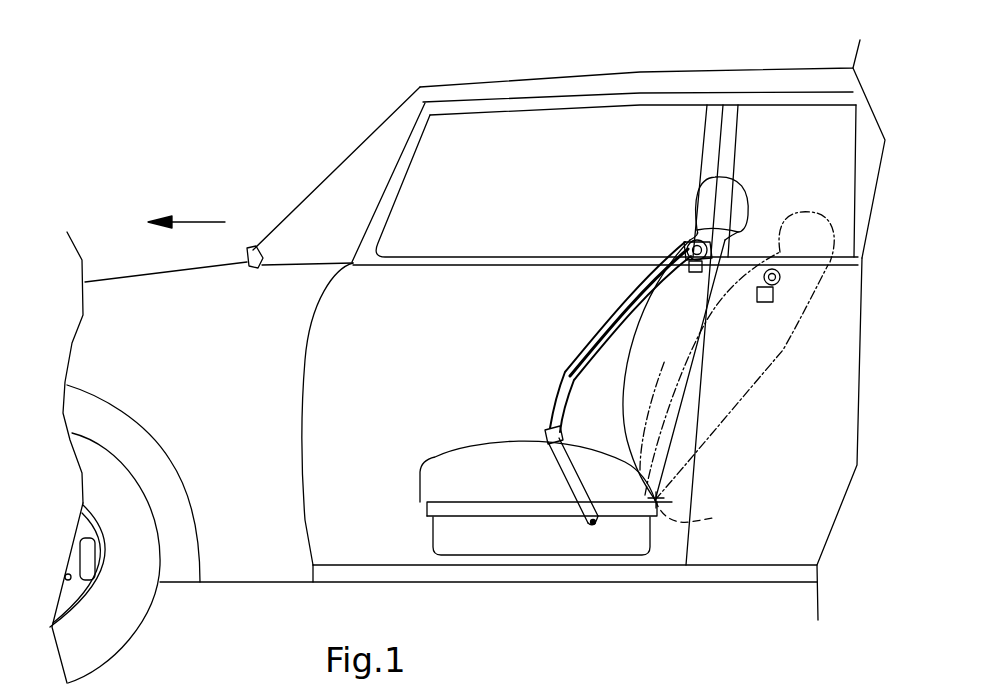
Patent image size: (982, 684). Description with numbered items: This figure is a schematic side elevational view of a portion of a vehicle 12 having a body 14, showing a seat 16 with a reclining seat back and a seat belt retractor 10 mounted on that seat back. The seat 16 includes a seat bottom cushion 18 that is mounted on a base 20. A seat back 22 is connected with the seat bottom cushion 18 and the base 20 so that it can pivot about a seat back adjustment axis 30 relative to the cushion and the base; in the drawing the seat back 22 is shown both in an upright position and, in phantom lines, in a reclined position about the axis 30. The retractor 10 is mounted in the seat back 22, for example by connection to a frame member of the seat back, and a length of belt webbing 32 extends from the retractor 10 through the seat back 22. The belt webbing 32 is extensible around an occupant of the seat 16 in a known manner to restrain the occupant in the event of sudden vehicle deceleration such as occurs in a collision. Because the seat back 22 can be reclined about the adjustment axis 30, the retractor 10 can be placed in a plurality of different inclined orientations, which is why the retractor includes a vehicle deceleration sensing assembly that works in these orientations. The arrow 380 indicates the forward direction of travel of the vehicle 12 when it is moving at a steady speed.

The retractor 10 is at (681, 248).
The vehicle 12 is at (195, 153).
The body 14 is at (420, 88).
The seat 16 is at (485, 440).
The seat bottom cushion 18 is at (420, 490).
The base 20 is at (433, 536).
The seat back 22 is at (717, 320).
The seat back adjustment axis 30 is at (697, 511).
The belt webbing 32 is at (567, 375).
The arrow 380 is at (186, 213).